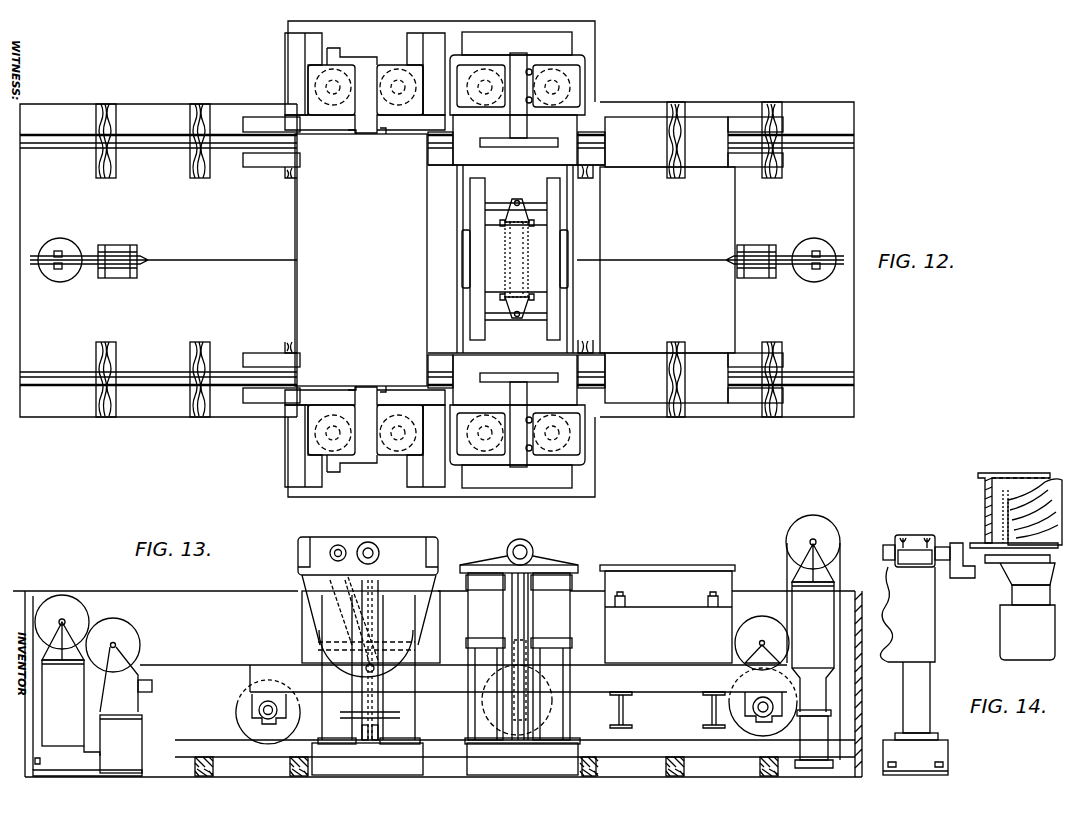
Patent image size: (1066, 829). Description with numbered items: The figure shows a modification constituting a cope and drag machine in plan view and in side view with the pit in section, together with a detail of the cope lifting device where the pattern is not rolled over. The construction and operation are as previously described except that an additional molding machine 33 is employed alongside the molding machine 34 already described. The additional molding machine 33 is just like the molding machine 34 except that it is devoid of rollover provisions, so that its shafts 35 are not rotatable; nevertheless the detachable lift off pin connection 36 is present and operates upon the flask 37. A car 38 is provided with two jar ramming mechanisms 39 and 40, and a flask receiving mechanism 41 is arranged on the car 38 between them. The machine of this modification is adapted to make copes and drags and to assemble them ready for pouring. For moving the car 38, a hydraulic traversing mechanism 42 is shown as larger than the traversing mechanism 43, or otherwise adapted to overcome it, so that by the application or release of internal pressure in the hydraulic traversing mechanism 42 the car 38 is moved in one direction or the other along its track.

In FIG. 12, the additional molding machine 33 is at (585, 82).
In FIG. 13, the additional molding machine 33 is at (493, 563).
In FIG. 12, the molding machine 34 is at (296, 83).
In FIG. 13, the molding machine 34 is at (393, 548).
In FIG. 14, the shafts 35 is at (943, 540).
In FIG. 14, the detachable lift off pin connection 36 is at (973, 568).
In FIG. 14, the flask 37 is at (992, 474).
In FIG. 12, the car 38 is at (748, 118).
In FIG. 13, the car 38 is at (463, 696).
In FIG. 12, the jar ramming mechanism 39 is at (667, 260).
In FIG. 13, the jar ramming mechanism 39 is at (667, 614).
In FIG. 12, the jar ramming mechanism 40 is at (361, 260).
In FIG. 13, the jar ramming mechanism 40 is at (302, 630).
In FIG. 12, the flask receiving mechanism 41 is at (517, 248).
In FIG. 12, the hydraulic traversing mechanism 42 is at (806, 242).
In FIG. 13, the hydraulic traversing mechanism 42 is at (805, 607).
In FIG. 12, the traversing mechanism 43 is at (117, 246).
In FIG. 13, the traversing mechanism 43 is at (100, 698).